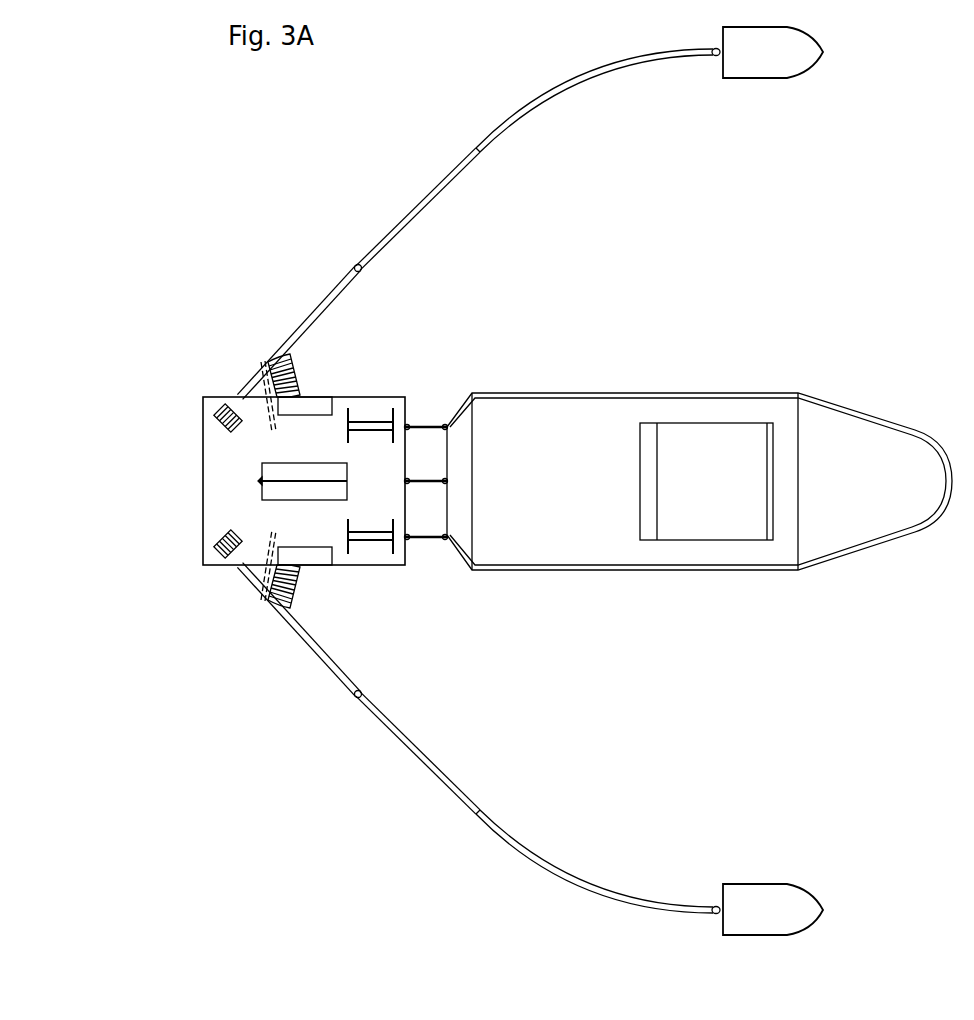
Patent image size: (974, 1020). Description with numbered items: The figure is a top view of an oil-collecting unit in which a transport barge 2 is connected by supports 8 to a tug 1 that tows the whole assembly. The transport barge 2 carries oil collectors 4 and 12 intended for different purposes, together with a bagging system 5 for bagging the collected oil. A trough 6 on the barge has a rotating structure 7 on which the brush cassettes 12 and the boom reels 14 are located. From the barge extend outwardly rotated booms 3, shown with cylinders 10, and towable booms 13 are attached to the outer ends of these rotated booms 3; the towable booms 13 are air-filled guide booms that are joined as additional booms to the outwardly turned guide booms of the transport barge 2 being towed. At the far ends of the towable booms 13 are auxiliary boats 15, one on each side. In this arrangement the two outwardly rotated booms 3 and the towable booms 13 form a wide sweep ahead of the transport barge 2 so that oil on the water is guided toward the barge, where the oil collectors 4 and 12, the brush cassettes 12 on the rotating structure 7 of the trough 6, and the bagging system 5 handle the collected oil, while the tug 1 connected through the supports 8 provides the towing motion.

The tug 1 is at (585, 443).
The transport barge 2 is at (217, 455).
The outwardly rotated boom 3 is at (313, 317).
The oil collector 4 is at (270, 402).
The bagging system 5 is at (270, 490).
The trough 6 is at (313, 555).
The rotating structure 7 is at (267, 592).
The support 8 is at (423, 537).
The cylinder 10 is at (263, 580).
The brush cassette 12 is at (262, 364).
The towable boom 13 is at (597, 75).
The boom reel 14 is at (367, 423).
The auxiliary boat 15 is at (760, 55).